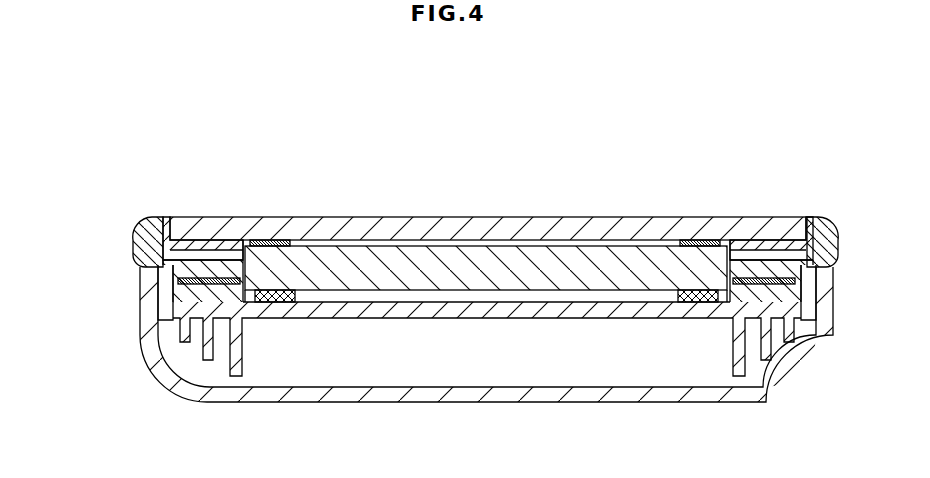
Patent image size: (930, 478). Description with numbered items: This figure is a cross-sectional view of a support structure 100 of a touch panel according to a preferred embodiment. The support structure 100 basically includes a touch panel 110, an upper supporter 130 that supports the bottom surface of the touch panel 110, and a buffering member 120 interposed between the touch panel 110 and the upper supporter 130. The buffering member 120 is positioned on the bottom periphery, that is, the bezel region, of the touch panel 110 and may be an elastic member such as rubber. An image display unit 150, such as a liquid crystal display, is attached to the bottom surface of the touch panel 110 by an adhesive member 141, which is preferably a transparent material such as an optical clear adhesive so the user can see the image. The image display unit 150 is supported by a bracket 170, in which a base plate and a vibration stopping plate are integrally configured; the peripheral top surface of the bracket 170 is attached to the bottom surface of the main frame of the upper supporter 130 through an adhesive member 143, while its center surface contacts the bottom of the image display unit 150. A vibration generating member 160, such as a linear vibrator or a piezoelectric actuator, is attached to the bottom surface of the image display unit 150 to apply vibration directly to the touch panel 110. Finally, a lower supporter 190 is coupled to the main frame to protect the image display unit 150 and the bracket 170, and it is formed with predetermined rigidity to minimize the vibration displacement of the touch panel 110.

The support structure 100 is at (349, 104).
The touch panel 110 is at (460, 228).
The buffering member 120 is at (213, 244).
The upper supporter 130 is at (137, 246).
The adhesive member 141 is at (283, 240).
The adhesive member 143 is at (192, 287).
The image display unit 150 is at (537, 258).
The vibration generating member 160 is at (268, 302).
The bracket 170 is at (386, 312).
The lower supporter 190 is at (146, 310).